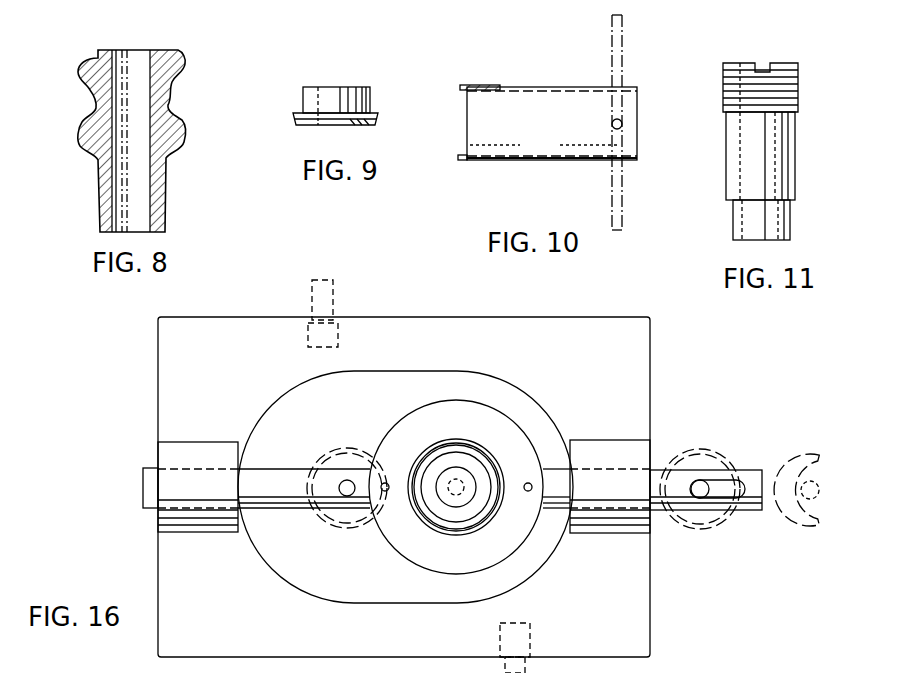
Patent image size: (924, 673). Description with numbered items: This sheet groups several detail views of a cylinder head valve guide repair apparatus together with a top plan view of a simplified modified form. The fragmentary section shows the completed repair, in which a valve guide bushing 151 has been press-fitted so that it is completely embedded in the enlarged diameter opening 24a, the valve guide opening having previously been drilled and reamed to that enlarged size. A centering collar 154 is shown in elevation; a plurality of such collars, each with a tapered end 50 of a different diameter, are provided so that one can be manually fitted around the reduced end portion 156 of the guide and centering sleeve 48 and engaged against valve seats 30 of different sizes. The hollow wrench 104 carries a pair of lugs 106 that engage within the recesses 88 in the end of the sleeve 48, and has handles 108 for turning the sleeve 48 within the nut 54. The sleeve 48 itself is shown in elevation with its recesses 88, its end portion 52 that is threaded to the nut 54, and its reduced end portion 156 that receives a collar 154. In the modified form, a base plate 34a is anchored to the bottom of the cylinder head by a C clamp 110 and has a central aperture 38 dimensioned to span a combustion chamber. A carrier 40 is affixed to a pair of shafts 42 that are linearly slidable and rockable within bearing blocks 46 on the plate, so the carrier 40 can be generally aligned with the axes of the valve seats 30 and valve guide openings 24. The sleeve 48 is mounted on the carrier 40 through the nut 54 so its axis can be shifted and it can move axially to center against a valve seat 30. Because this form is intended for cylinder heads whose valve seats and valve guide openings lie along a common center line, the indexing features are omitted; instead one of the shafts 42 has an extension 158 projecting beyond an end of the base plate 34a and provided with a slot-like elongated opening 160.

In FIG. 8, the valve guide bushing 151 is at (128, 62).
In FIG. 8, the enlarged diameter opening 24a is at (104, 172).
In FIG. 9, the tapered end 50 is at (300, 123).
In FIG. 9, the centering collar 154 is at (369, 95).
In FIG. 10, the hollow wrench 104 is at (542, 87).
In FIG. 10, the lugs 106 is at (468, 118).
In FIG. 10, the handles 108 is at (622, 62).
In FIG. 11, the recesses 88 is at (762, 63).
In FIG. 11, the end portion 52 is at (796, 80).
In FIG. 11, the guide and centering sleeve 48 is at (776, 168).
In FIG. 16, the guide and centering sleeve 48 is at (446, 449).
In FIG. 11, the reduced end portion 156 is at (733, 218).
In FIG. 16, the base plate 34a is at (650, 363).
In FIG. 16, the C clamp 110 is at (312, 306).
In FIG. 16, the central aperture 38 is at (392, 371).
In FIG. 16, the carrier 40 is at (472, 406).
In FIG. 16, the shafts 42 is at (146, 496).
In FIG. 16, the bearing blocks 46 is at (192, 532).
In FIG. 16, the valve seats 30 is at (345, 450).
In FIG. 16, the valve guide openings 24 is at (338, 489).
In FIG. 16, the nut 54 is at (482, 520).
In FIG. 16, the extension 158 is at (745, 474).
In FIG. 16, the elongated opening 160 is at (720, 499).